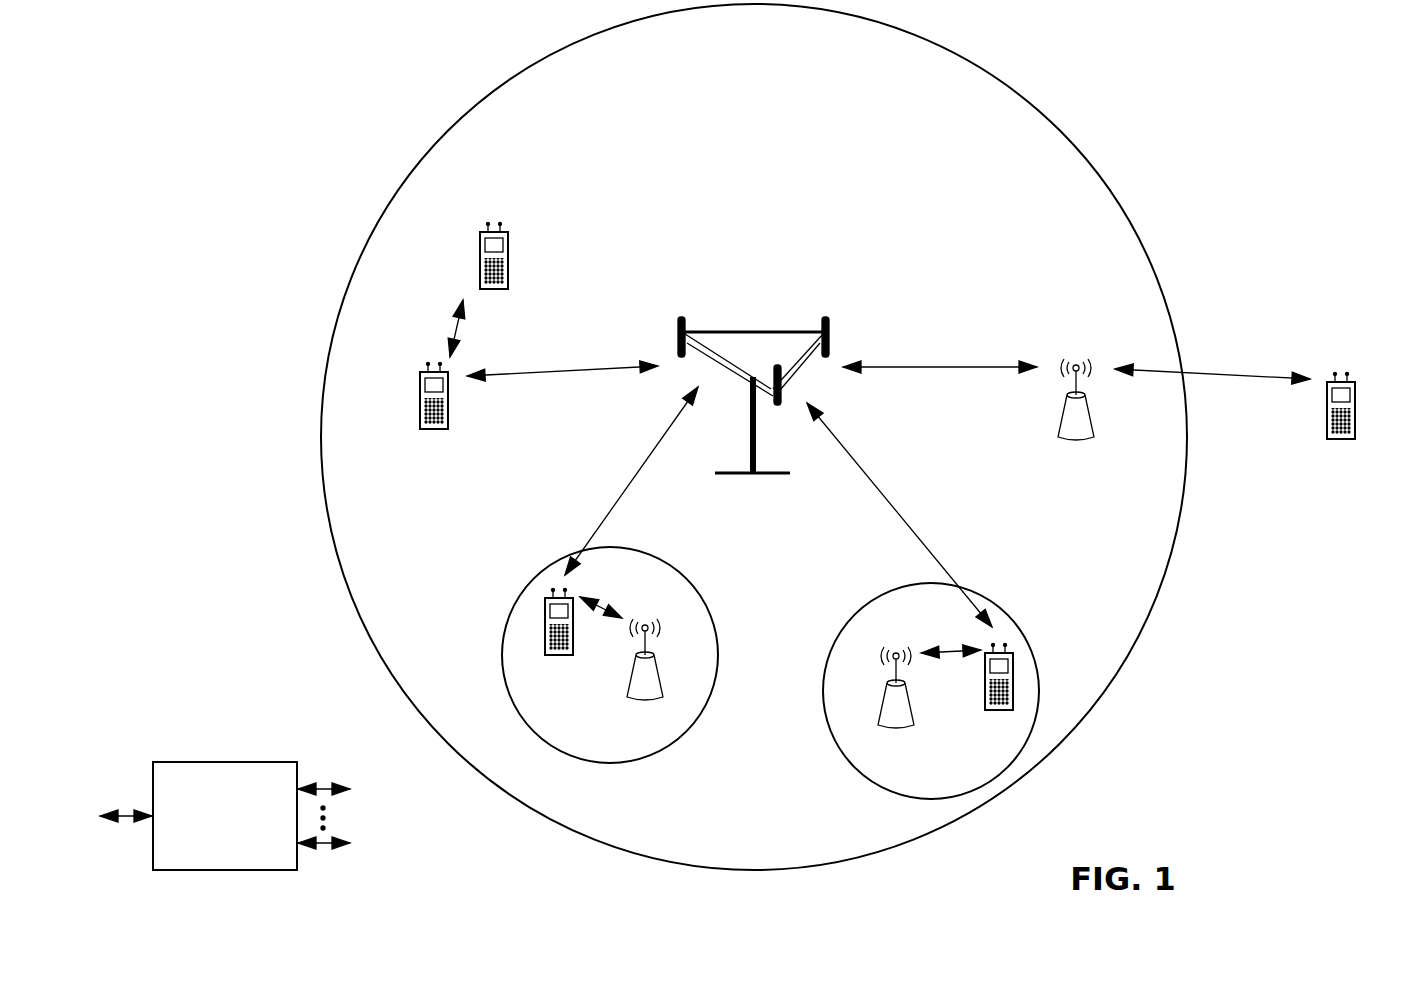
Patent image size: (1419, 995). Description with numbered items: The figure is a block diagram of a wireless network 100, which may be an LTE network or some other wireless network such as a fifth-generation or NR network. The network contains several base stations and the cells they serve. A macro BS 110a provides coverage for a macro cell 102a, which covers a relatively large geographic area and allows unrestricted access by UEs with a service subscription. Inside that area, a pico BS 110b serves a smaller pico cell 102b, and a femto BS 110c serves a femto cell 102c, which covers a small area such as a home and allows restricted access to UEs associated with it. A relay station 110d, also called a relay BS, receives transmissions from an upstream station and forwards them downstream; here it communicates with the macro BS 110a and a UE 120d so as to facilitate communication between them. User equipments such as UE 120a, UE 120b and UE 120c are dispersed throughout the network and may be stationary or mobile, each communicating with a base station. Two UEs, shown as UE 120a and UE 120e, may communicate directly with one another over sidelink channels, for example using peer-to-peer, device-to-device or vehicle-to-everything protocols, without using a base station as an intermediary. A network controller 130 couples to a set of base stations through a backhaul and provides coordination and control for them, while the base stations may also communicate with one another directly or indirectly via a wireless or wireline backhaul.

The wireless network 100 is at (1232, 95).
The macro cell 102a is at (1041, 115).
The pico cell 102b is at (689, 582).
The femto cell 102c is at (839, 617).
The macro BS 110a is at (750, 331).
The pico BS 110b is at (663, 686).
The femto BS 110c is at (879, 714).
The relay station 110d is at (1077, 363).
The UE 120a is at (421, 385).
The UE 120b is at (545, 647).
The UE 120c is at (985, 702).
The UE 120d is at (1356, 392).
The UE 120e is at (481, 241).
The network controller 130 is at (222, 761).